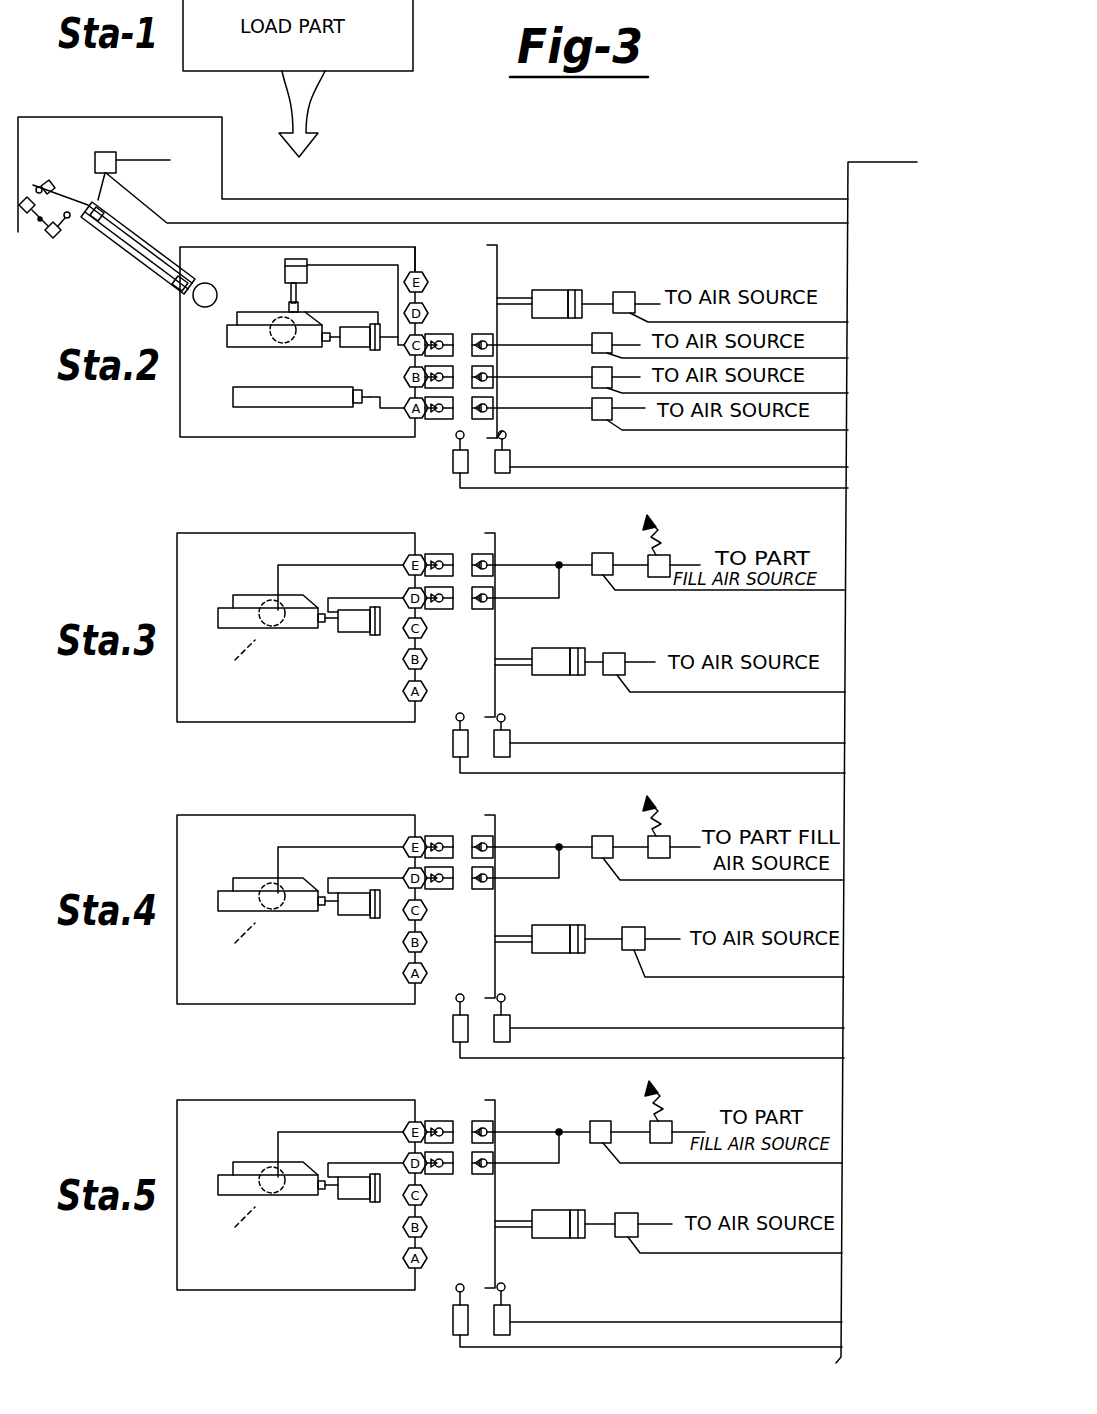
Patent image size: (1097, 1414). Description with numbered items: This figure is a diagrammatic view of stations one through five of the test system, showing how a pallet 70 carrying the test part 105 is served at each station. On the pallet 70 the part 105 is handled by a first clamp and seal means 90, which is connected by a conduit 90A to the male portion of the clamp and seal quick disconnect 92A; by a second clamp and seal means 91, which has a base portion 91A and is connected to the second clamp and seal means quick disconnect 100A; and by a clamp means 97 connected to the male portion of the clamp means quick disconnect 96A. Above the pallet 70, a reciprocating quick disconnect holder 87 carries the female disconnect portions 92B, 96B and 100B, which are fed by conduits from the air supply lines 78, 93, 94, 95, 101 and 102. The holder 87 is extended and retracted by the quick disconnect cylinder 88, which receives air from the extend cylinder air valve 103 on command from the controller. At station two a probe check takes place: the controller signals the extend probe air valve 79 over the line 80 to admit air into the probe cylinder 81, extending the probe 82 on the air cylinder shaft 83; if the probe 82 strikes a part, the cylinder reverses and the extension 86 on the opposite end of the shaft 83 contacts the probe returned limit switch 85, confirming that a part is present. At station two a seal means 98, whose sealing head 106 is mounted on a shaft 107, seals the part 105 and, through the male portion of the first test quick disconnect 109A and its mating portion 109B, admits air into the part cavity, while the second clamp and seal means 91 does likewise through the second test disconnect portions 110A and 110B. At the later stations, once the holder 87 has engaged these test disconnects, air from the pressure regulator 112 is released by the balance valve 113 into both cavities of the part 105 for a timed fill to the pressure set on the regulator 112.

The pallet 70 is at (180, 408).
The main air supply line 78 is at (912, 720).
The extend probe air valve 79 is at (116, 155).
The line 80 is at (688, 240).
The probe cylinder 81 is at (140, 262).
The probe 82 is at (203, 307).
The air cylinder shaft 83 is at (185, 292).
The probe returned limit switch 85 is at (22, 210).
The extension 86 is at (46, 186).
The quick disconnect holder 87 is at (52, 242).
The quick disconnect cylinder 88 is at (600, 278).
The first clamp and seal means 90 is at (255, 410).
The conduit 90A is at (390, 440).
The second clamp and seal means 91 is at (278, 598).
The base portion 91A is at (375, 248).
The clamp and seal quick disconnect (male portion) 92A is at (425, 425).
The clamp and seal quick disconnect (female portion) 92B is at (468, 420).
The air line 93 is at (552, 410).
The air line 94 is at (605, 420).
The air line 95 is at (745, 440).
The clamp means quick disconnect (male portion) 96A is at (404, 378).
The clamp means quick disconnect (female portion) 96B is at (497, 376).
The clamp means 97 is at (286, 268).
The seal means 98 is at (350, 350).
The second clamp and seal means quick disconnect (male portion) 100A is at (440, 334).
The second clamp and seal means quick disconnect (female portion) 100B is at (476, 334).
The regulator 101 is at (592, 385).
The regulator 102 is at (595, 333).
The extend cylinder air valve 103 is at (630, 292).
The test part 105 is at (230, 938).
The sealing head 106 is at (322, 628).
The shaft 107 is at (335, 634).
The first test quick disconnect (male portion) 109A is at (445, 609).
The valve 109B is at (480, 609).
The valve 110A is at (464, 520).
The valve 110B is at (480, 554).
The pressure regulator 112 is at (668, 555).
The balance valve 113 is at (612, 553).